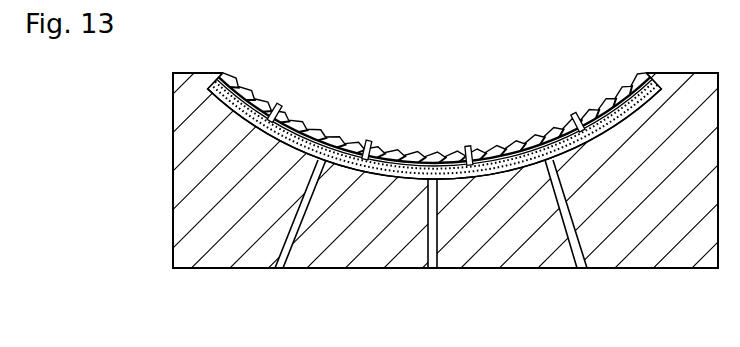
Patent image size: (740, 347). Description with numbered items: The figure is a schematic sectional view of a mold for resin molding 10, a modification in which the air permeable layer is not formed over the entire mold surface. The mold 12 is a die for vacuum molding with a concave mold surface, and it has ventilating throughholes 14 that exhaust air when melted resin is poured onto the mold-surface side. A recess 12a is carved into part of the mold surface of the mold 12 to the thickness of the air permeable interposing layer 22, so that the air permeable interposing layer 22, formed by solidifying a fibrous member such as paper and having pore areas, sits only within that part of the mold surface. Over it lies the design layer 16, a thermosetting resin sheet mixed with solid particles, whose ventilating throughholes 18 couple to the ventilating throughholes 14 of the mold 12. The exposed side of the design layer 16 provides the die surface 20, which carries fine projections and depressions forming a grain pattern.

The mold for resin molding 10 is at (370, 177).
The mold 12 is at (370, 203).
The recess 12a is at (291, 137).
The ventilating throughholes 14 is at (283, 270).
The design layer 16 is at (628, 105).
The ventilating throughholes 18 is at (277, 112).
The die surface 20 is at (323, 130).
The air permeable interposing layer 22 is at (636, 115).